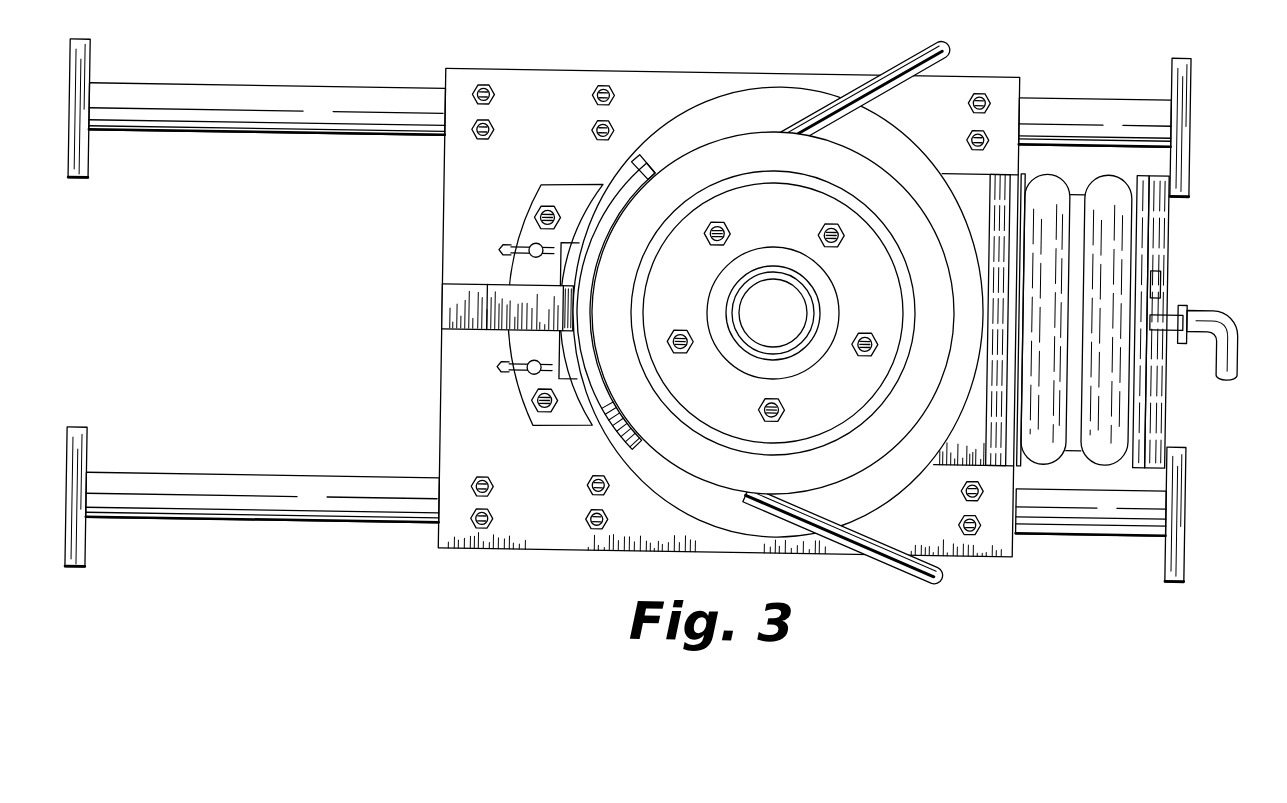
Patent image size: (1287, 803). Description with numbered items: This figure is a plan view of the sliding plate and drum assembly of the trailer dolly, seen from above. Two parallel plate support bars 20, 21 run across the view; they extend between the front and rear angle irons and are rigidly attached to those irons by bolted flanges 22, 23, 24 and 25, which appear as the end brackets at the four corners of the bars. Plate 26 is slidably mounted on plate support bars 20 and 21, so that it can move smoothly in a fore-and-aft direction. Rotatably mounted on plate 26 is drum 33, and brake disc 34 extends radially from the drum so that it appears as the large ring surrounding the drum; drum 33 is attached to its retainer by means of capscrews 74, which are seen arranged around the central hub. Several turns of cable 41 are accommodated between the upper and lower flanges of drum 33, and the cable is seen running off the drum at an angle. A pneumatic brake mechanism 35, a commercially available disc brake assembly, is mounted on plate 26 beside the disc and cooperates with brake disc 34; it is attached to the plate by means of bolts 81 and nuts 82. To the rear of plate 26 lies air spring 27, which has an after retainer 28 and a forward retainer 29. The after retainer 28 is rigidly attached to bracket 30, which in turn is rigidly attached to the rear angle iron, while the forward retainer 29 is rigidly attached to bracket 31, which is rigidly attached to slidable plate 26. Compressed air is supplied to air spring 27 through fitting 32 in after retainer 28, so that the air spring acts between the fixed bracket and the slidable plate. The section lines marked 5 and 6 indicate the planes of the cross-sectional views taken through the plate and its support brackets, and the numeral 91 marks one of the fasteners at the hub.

The plate support bar 20 is at (282, 495).
The plate support bar 21 is at (262, 121).
The bolted flange 22 is at (89, 462).
The bolted flange 23 is at (86, 168).
The bolted flange 24 is at (1169, 556).
The bolted flange 25 is at (1168, 63).
The plate 26 is at (553, 90).
The air spring 27 is at (1103, 455).
The after retainer 28 is at (1137, 210).
The forward retainer 29 is at (1021, 210).
The bracket 30 is at (1162, 233).
The bracket 31 is at (977, 187).
The fitting 32 is at (1221, 306).
The drum 33 is at (929, 246).
The brake disc 34 is at (686, 120).
The pneumatic brake mechanism 35 is at (509, 400).
The cable 41 is at (914, 53).
The capscrews 74 is at (759, 404).
The bolts 81 is at (533, 219).
The nuts 82 is at (540, 203).
The nut 91 is at (786, 412).
The section line 5- 5 is at (758, 70).
The section line 6- 6 is at (432, 313).